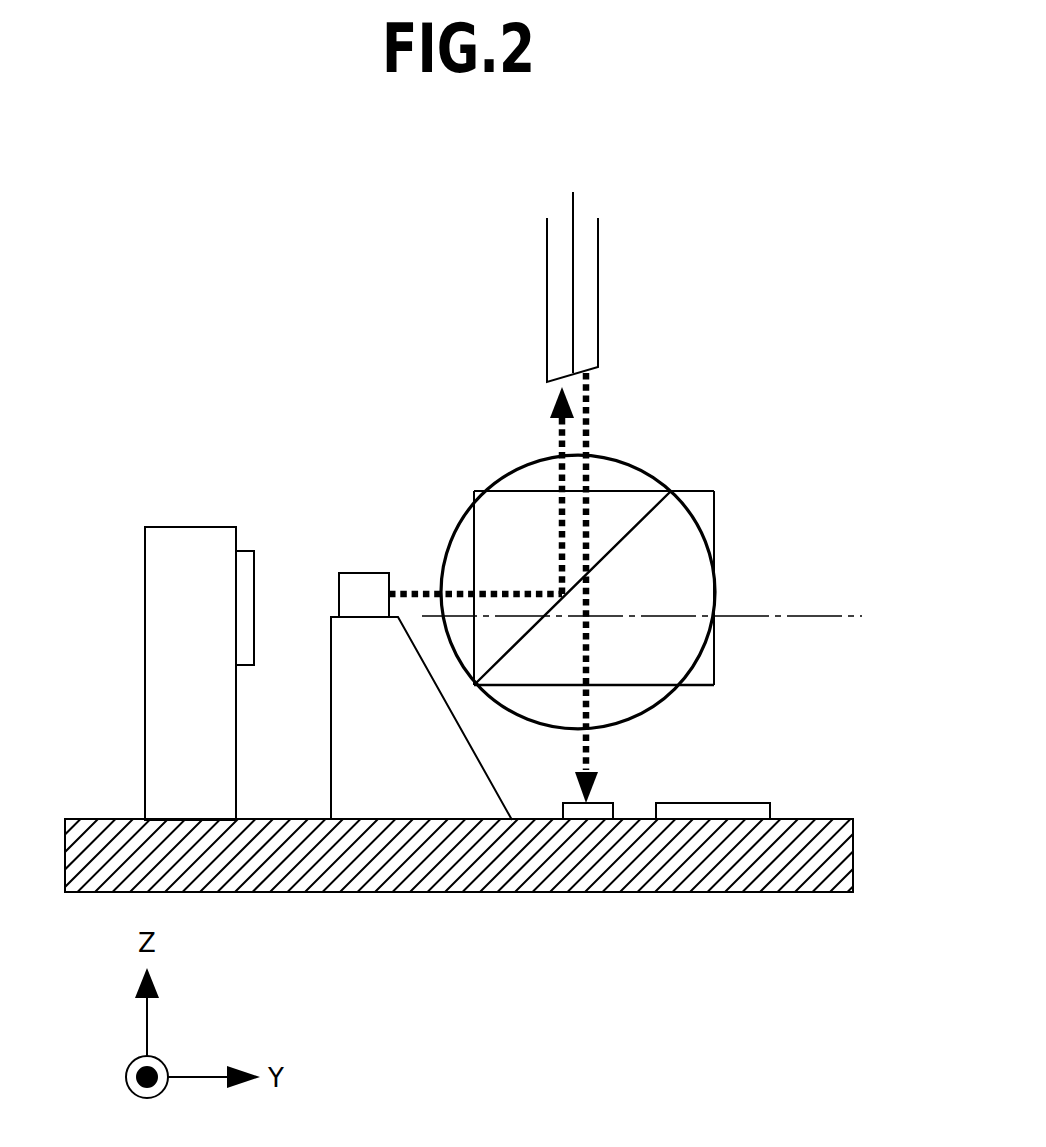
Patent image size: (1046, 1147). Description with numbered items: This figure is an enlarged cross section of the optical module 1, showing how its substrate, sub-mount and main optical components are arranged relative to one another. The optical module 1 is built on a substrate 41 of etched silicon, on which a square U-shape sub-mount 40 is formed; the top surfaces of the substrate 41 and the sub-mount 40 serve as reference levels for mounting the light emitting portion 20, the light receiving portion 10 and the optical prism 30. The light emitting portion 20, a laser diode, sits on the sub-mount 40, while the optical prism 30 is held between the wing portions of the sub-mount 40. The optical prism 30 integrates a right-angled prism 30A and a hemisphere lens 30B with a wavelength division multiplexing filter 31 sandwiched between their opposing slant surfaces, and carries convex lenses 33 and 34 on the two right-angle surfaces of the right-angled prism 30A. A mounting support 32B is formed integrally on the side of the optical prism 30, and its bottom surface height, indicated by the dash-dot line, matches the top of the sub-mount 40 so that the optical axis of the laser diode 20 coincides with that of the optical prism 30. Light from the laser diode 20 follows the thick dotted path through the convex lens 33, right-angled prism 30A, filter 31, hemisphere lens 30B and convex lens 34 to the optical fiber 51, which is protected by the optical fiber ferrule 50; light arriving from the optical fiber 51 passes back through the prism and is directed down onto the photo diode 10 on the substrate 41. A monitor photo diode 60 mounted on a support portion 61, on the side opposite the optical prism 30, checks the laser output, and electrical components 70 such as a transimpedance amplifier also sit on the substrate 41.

The optical module 1 is at (233, 345).
The light receiving portion 10 is at (601, 808).
The light emitting portion 20 is at (366, 590).
The optical prism 30 is at (607, 537).
The right-angled prism 30A is at (520, 523).
The hemisphere lens 30B is at (648, 665).
The wavelength division multiplexing filter 31 is at (633, 530).
The mounting support 32B is at (698, 490).
The convex lens 33 is at (460, 557).
The convex lens 34 is at (620, 478).
The sub-mount 40 is at (350, 720).
The substrate 41 is at (700, 853).
The optical fiber ferrule 50 is at (585, 342).
The optical fiber 51 is at (573, 192).
The monitor photo diode 60 is at (246, 558).
The support portion 61 is at (163, 668).
The electrical components 70 is at (713, 810).